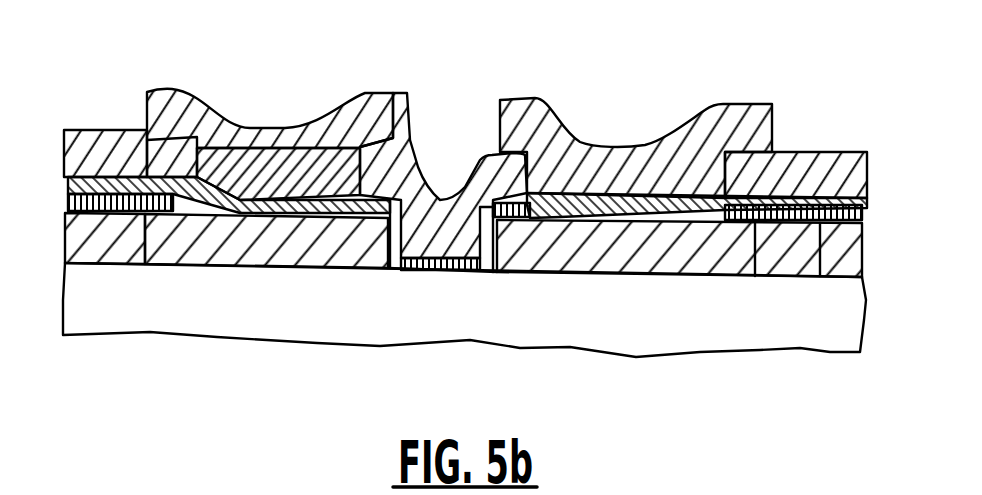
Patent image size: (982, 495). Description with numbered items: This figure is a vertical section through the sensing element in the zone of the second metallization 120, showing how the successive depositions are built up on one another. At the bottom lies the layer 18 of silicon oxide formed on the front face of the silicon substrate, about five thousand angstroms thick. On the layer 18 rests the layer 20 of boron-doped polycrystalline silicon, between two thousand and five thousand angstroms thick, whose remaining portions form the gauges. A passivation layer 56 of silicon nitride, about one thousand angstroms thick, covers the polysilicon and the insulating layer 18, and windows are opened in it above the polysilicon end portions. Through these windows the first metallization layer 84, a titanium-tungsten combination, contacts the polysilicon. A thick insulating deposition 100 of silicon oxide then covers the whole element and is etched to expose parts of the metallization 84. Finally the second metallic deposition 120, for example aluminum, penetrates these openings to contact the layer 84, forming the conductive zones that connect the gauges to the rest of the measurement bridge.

The layer of silicon oxide 18 is at (203, 313).
The layer of polycrystalline silicon 20 is at (100, 240).
The passivation layer 56 is at (68, 199).
The first metallization layer 84 is at (100, 130).
The thick insulating deposition 100 is at (127, 130).
The second metallic deposition 120 is at (252, 126).